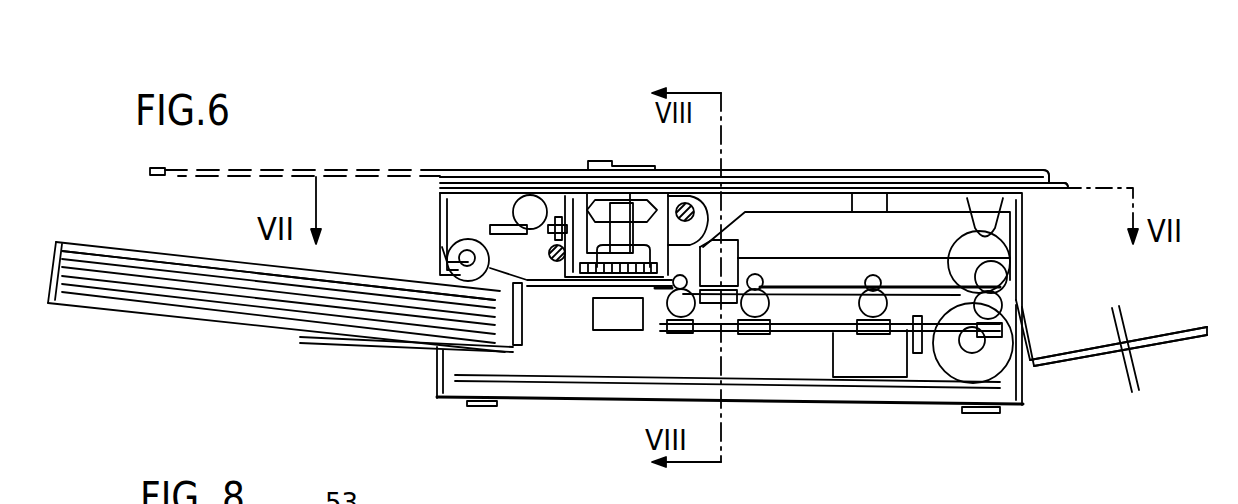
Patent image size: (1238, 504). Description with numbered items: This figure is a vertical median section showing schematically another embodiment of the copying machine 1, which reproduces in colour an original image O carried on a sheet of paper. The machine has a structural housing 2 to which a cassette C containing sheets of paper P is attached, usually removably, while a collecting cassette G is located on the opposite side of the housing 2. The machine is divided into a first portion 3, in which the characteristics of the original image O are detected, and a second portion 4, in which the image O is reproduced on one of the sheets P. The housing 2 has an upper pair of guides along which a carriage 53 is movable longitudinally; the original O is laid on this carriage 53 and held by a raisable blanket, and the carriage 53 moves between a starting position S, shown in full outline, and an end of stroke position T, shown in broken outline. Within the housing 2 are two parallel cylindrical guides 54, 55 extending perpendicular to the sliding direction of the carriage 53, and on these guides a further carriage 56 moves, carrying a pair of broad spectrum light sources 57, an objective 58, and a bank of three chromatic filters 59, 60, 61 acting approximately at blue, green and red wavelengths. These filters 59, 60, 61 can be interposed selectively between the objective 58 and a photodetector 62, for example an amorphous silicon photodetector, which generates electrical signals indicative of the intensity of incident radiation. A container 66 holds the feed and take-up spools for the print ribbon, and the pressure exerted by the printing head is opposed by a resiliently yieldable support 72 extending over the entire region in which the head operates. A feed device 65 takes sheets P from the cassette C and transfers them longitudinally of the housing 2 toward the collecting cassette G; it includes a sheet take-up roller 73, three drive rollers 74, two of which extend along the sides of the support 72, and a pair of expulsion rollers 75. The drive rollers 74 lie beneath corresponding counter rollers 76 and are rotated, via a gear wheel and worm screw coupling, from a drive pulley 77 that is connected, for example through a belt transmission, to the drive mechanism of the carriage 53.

The copying machine 1 is at (1072, 151).
The housing 2 is at (1027, 388).
The first portion 3 is at (550, 164).
The second portion 4 is at (702, 322).
The carriage 53 is at (646, 160).
The cylindrical guide 54 is at (553, 258).
The cylindrical guide 55 is at (684, 208).
The further carriage 56 is at (625, 272).
The broad spectrum light sources 57 is at (590, 198).
The objective 58 is at (620, 222).
The chromatic filter 59 is at (598, 268).
The chromatic filter 60 is at (577, 205).
The chromatic filter 61 is at (655, 278).
The photodetector 62 is at (593, 325).
The feed device 65 is at (868, 345).
The container 66 is at (860, 222).
The resiliently yieldable support 72 is at (727, 300).
The sheet take-up roller 73 is at (468, 247).
The drive rollers 74 is at (683, 300).
The expulsion rollers 75 is at (993, 298).
The counter rollers 76 is at (684, 274).
The drive pulley 77 is at (983, 363).
The end of stroke position T is at (284, 160).
The starting position S is at (797, 170).
The original image O is at (1027, 172).
The sheets of paper P is at (104, 276).
The cassette C is at (172, 318).
The collecting cassette G is at (1174, 337).